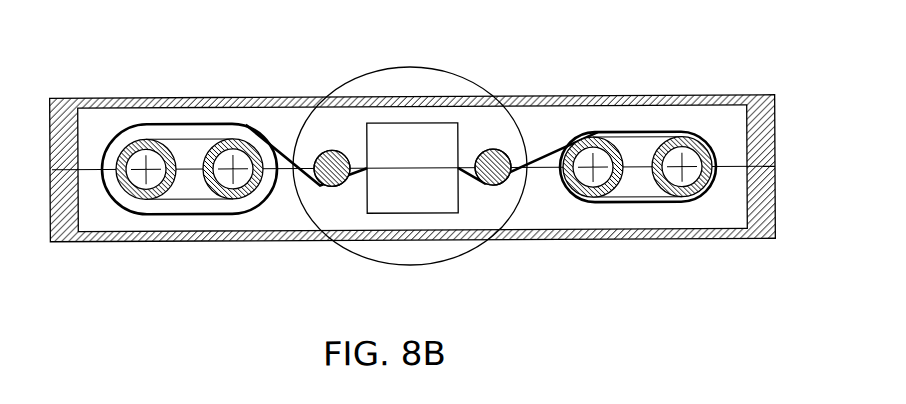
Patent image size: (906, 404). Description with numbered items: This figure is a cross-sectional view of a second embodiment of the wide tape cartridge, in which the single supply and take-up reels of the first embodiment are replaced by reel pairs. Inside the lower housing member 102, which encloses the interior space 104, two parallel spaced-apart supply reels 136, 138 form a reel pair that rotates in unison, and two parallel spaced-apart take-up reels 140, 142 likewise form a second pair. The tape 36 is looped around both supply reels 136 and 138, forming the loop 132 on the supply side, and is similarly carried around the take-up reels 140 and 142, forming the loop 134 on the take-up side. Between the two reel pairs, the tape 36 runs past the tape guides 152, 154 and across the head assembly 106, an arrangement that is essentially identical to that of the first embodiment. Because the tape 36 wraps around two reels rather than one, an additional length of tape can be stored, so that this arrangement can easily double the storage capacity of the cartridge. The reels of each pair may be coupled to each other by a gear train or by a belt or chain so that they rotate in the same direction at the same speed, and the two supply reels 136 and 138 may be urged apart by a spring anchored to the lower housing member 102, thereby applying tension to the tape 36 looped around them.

The tape 36 is at (286, 147).
The lower housing member 102 is at (722, 240).
The housing cavity 104 is at (675, 118).
The head assembly 106 is at (430, 83).
The first belt loop 132 is at (167, 124).
The second belt loop 134 is at (611, 133).
The supply reel 136 is at (149, 174).
The supply reel 138 is at (234, 174).
The take-up reel 140 is at (592, 176).
The take-up reel 142 is at (682, 176).
The tape guide 152 is at (324, 183).
The tape guide 154 is at (490, 183).